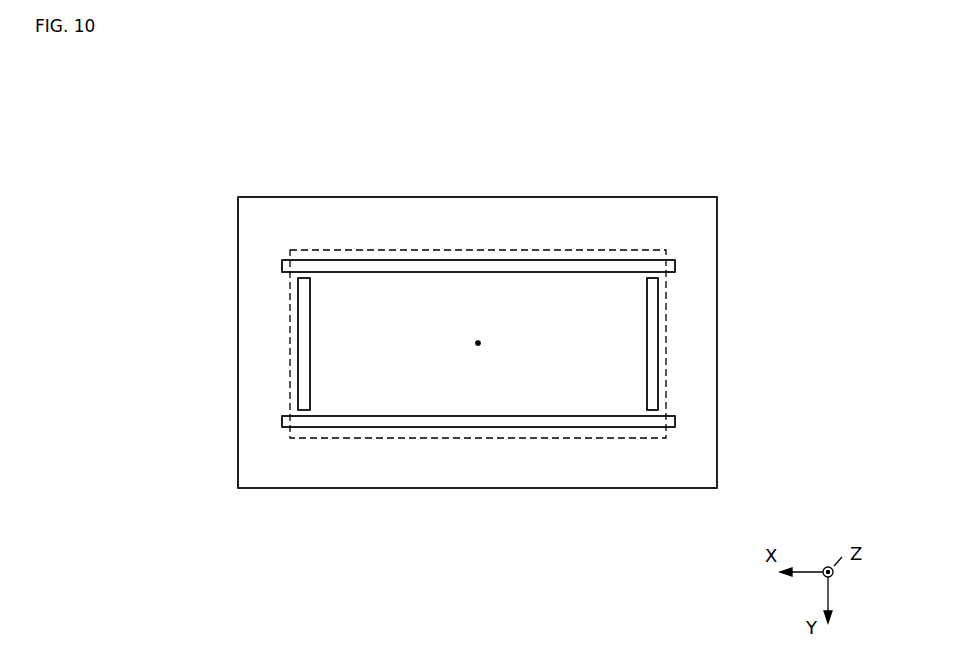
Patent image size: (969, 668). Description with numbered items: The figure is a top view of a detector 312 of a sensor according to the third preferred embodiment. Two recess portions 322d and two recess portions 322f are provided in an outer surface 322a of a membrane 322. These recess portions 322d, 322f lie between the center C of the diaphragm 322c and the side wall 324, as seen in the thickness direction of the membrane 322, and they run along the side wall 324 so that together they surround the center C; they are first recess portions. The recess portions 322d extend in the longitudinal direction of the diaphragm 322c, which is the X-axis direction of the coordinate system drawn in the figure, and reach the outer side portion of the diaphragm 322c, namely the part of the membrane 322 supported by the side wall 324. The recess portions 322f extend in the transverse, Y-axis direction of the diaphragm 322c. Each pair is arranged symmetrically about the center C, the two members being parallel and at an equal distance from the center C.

The detector 312 is at (174, 225).
The membrane 322 is at (698, 238).
The outer surface 322a is at (505, 389).
The diaphragm 322c is at (668, 332).
The recess portions 322d is at (358, 273).
The recess portions 322f is at (298, 292).
The side wall 324 is at (487, 225).
The center C is at (480, 343).